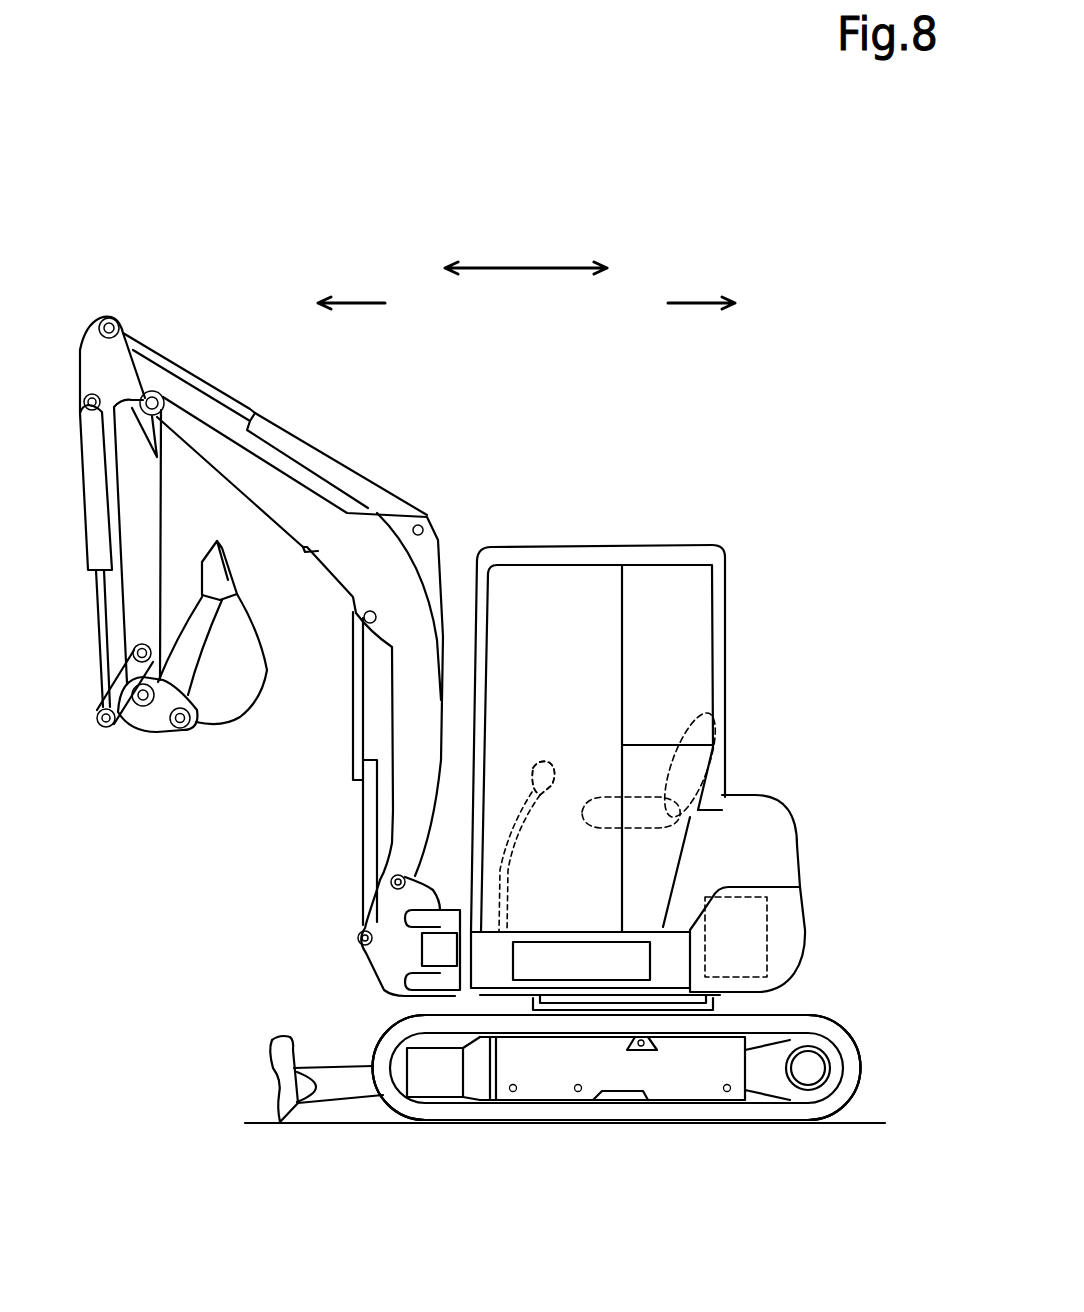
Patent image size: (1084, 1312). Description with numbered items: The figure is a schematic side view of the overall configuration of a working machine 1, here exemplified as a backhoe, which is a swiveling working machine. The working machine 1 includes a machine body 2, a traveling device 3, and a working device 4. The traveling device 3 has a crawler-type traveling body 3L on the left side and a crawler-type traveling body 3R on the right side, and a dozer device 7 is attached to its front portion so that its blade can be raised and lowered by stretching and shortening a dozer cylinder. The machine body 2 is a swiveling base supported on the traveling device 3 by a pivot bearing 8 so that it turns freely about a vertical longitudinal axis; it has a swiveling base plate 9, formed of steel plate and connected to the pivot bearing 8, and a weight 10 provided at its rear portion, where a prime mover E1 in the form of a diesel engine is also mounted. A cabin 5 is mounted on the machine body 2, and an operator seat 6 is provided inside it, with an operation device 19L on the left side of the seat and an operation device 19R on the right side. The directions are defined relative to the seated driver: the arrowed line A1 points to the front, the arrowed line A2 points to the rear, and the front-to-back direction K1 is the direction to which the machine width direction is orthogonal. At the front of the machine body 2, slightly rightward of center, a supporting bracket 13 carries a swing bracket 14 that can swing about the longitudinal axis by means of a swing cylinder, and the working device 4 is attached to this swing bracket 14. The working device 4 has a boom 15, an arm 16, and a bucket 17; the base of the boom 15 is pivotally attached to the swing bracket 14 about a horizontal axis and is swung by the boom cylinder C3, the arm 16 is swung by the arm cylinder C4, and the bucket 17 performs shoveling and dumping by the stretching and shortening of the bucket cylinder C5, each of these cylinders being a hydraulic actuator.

The working machine 1 is at (812, 602).
The machine body 2 is at (470, 1022).
The traveling device 3 is at (872, 1035).
The traveling body 3L is at (667, 1039).
The traveling body 3R is at (667, 1039).
The working device 4 is at (442, 506).
The cabin 5 is at (740, 581).
The operator seat 6 is at (690, 730).
The dozer device 7 is at (343, 1050).
The pivot bearing 8 is at (703, 1003).
The swiveling base plate 9 is at (529, 1010).
The weight 10 is at (790, 912).
The supporting bracket 13 is at (437, 917).
The swing bracket 14 is at (377, 967).
The boom 15 is at (373, 553).
The arm 16 is at (145, 517).
The bucket 17 is at (248, 677).
The operation device 19L is at (552, 750).
The operation device 19R is at (552, 728).
The boom cylinder C3 is at (362, 823).
The arm cylinder C4 is at (293, 433).
The bucket cylinder C5 is at (93, 552).
The prime mover E1 is at (770, 937).
The arrowed line A1 is at (345, 303).
The arrowed line A2 is at (692, 303).
The front-to-back direction K1 is at (528, 268).